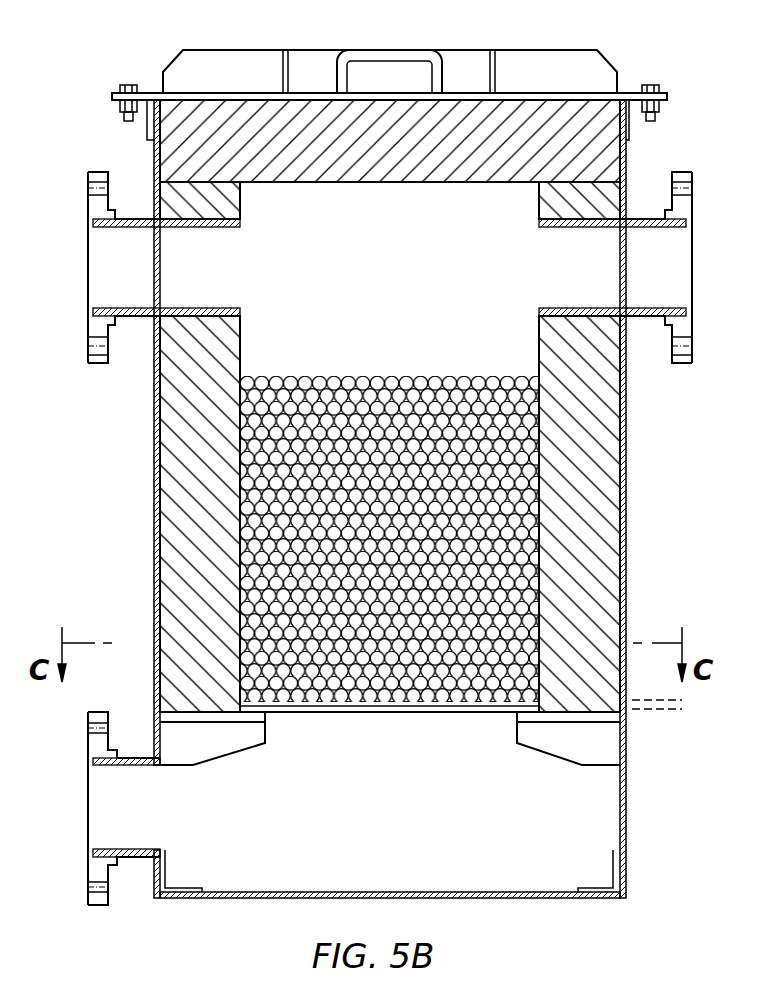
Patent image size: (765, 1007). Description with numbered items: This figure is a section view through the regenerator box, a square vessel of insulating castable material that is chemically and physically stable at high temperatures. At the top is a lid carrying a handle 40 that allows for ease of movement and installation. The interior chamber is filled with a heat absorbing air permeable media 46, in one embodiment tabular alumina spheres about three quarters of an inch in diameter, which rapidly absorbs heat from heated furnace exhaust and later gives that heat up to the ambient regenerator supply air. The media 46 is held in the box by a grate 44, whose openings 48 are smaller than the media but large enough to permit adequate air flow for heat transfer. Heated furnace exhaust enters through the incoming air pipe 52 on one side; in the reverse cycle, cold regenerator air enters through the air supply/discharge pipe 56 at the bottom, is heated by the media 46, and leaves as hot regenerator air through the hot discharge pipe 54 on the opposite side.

The handle 40 is at (441, 72).
The grate 44 is at (648, 710).
The heat absorbing air permeable media 46 is at (348, 383).
The openings 48 is at (376, 758).
The incoming air pipe 52 is at (675, 268).
The hot discharge pipe 54 is at (112, 272).
The air supply/discharge pipe 56 is at (112, 810).